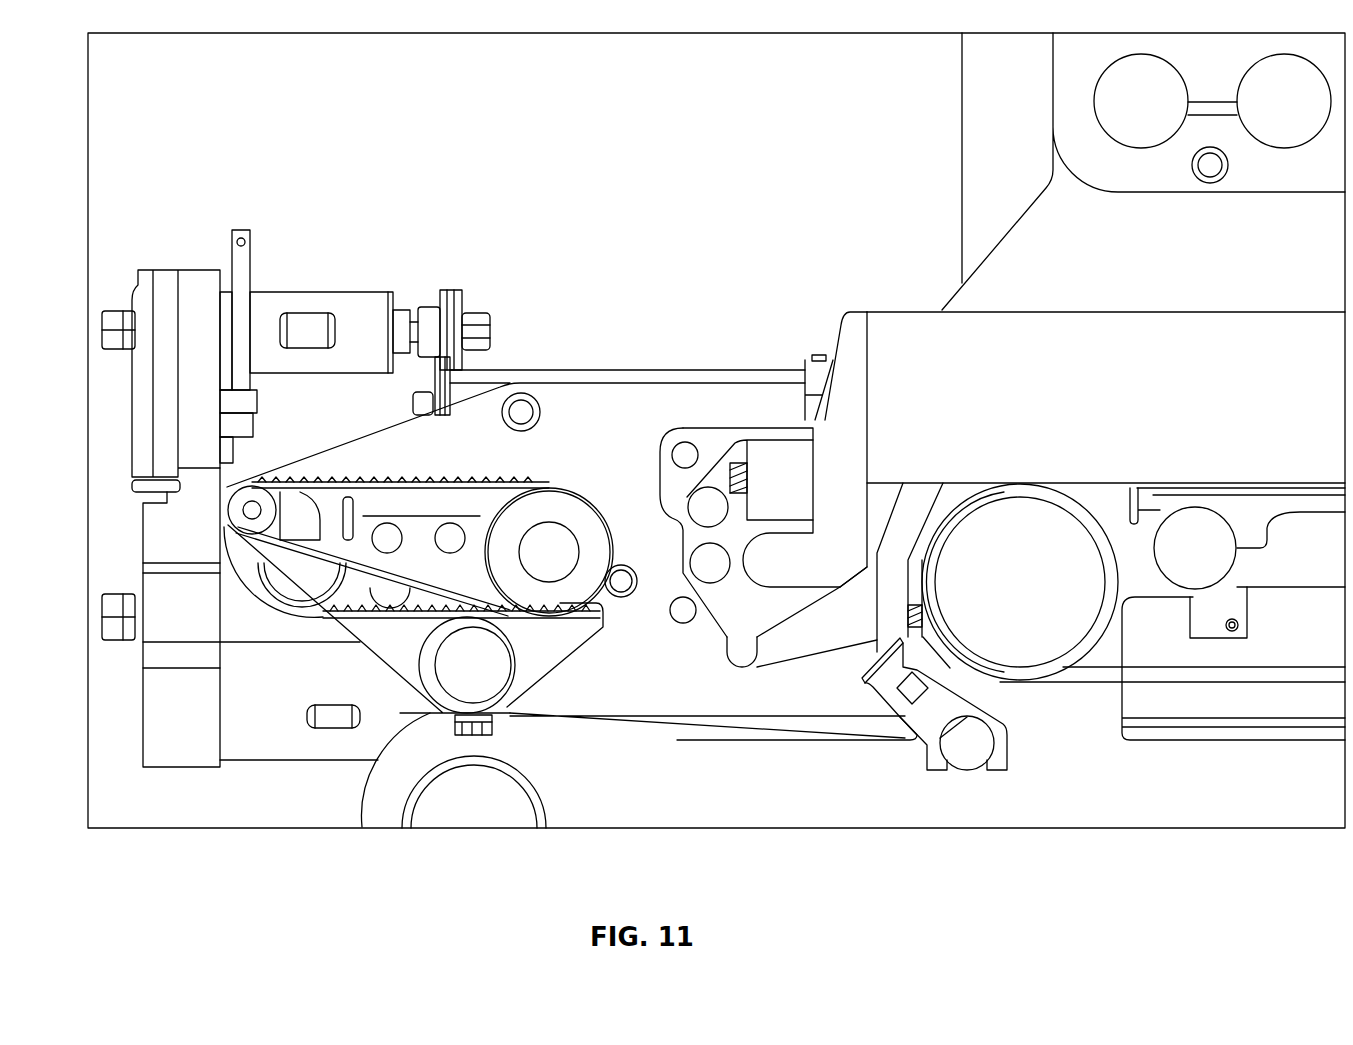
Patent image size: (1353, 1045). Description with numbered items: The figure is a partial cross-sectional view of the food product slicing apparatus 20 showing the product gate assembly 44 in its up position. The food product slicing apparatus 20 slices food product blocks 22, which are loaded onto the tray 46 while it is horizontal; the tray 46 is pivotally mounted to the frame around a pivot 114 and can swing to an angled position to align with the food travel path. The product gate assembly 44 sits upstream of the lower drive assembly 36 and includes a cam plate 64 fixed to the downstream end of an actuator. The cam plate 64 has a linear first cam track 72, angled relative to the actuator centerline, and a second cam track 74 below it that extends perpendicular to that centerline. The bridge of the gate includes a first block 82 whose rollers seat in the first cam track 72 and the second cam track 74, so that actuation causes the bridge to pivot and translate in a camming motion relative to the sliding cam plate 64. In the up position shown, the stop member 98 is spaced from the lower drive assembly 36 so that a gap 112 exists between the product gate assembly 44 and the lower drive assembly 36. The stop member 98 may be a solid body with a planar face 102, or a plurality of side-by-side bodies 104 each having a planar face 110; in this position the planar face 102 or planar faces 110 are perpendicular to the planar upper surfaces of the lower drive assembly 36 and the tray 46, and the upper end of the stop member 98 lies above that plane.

The food product slicing apparatus 20 is at (372, 230).
The food product block 22 is at (937, 357).
The lower drive assembly 36 is at (530, 467).
The product gate assembly 44 is at (827, 666).
The tray 46 is at (1071, 686).
The cam plate 64 is at (707, 653).
The first cam track 72 is at (655, 477).
The second cam track 74 is at (740, 670).
The first block 82 is at (777, 608).
The stop member 98 is at (796, 348).
The body 104 is at (837, 418).
The planar face 102 is at (836, 371).
The planar face 110 is at (880, 363).
The gap 112 is at (650, 548).
The pivot 114 is at (482, 808).